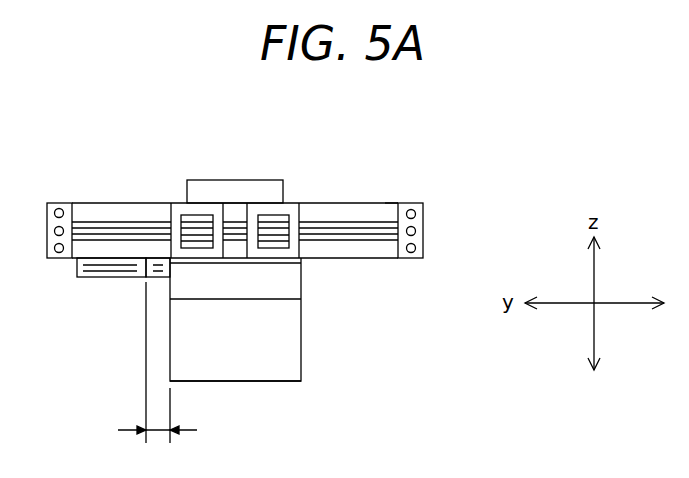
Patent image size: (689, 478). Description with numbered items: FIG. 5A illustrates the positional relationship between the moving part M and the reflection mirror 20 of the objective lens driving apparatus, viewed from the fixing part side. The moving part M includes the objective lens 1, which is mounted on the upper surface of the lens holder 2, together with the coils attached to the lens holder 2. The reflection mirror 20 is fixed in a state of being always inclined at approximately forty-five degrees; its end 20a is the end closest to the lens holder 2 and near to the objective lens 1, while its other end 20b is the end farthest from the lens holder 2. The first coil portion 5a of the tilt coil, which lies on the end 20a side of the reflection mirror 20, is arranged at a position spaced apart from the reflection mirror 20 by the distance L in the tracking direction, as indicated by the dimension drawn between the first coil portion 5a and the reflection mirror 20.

The objective lens 1 is at (232, 180).
The lens holder 2 is at (350, 203).
The moving part M is at (385, 203).
The first coil portion 5a is at (109, 277).
The reflection mirror 20 is at (280, 336).
The end of the reflection mirror 20a is at (262, 265).
The end of the reflection mirror 20b is at (262, 381).
The distance L is at (157, 376).